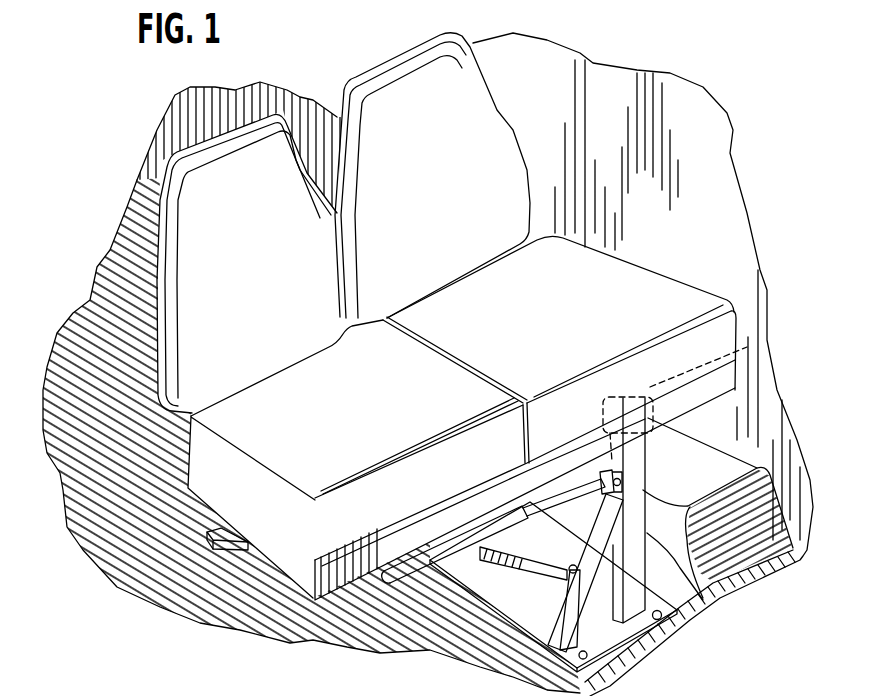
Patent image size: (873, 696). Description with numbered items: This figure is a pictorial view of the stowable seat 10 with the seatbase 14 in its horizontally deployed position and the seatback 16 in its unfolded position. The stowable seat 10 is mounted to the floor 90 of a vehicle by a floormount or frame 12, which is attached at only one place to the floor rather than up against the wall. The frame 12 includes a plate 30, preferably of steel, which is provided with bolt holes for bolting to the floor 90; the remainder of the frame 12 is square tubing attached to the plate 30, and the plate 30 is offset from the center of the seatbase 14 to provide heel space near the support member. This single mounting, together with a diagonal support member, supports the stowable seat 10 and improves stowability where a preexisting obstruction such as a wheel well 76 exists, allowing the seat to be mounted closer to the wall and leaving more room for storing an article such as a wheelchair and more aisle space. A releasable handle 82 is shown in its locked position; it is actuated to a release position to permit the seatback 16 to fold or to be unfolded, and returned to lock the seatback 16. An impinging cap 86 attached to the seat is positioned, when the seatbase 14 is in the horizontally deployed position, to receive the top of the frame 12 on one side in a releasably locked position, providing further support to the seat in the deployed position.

The stowable seat 10 is at (522, 113).
The floormount or frame 12 is at (660, 570).
The seatbase 14 is at (247, 480).
The seatback 16 is at (150, 168).
The plate 30 is at (533, 606).
The wheel well 76 is at (718, 460).
The releasable handle 82 is at (227, 547).
The impinging cap 86 is at (742, 343).
The floor 90 is at (100, 475).